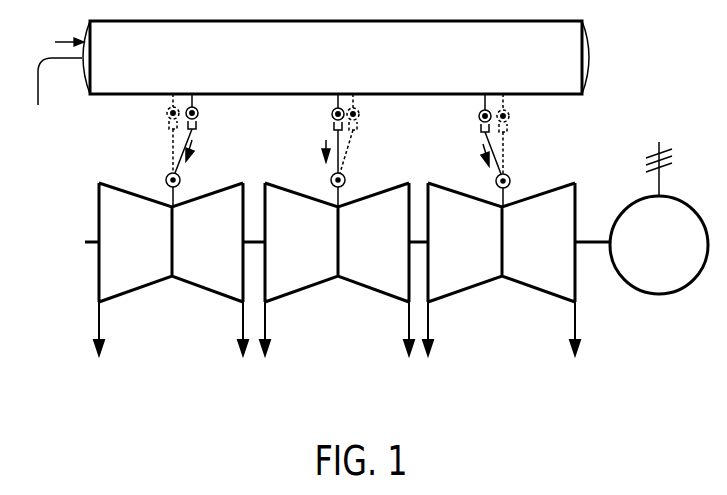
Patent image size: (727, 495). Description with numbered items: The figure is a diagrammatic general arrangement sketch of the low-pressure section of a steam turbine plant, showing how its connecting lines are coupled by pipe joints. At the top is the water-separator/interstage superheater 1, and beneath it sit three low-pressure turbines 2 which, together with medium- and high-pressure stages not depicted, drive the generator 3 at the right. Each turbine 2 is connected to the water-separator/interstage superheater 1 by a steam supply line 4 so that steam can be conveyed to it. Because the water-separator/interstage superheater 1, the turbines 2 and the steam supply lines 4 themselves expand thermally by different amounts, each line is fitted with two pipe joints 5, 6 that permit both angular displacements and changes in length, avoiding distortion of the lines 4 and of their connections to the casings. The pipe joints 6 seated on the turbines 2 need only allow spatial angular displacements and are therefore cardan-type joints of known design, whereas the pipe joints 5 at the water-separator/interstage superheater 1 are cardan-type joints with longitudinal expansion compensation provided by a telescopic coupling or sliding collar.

The water-separator/interstage superheater 1 is at (349, 68).
The low-pressure turbine 2 is at (200, 252).
The generator 3 is at (661, 294).
The steam supply line 4 is at (196, 147).
The pipe joint 5 is at (199, 113).
The pipe joint 6 is at (181, 180).